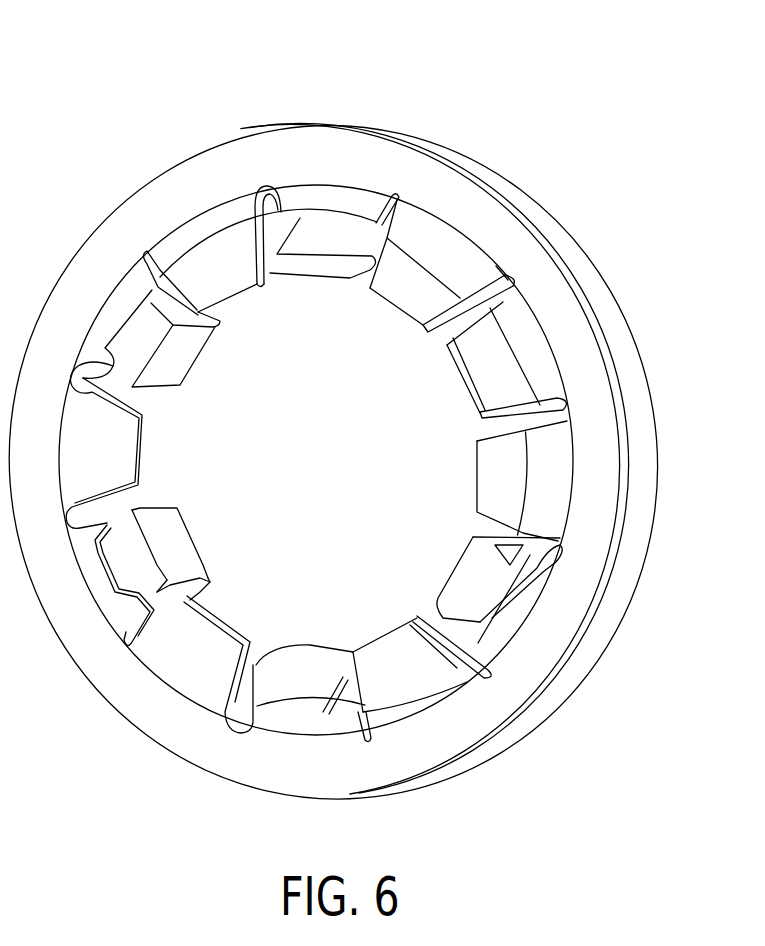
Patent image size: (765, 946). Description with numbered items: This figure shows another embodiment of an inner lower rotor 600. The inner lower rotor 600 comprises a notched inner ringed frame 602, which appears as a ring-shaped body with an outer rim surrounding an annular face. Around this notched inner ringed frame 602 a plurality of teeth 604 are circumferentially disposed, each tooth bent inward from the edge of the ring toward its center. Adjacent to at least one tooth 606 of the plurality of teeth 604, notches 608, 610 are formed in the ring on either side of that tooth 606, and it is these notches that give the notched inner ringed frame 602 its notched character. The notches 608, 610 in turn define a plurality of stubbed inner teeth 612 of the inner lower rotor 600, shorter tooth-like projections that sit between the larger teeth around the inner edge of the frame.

The inner lower rotor 600 is at (421, 92).
The notched inner ringed frame 602 is at (528, 248).
The plurality of teeth 604 is at (412, 318).
The tooth 606 is at (477, 482).
The notch 608 is at (567, 412).
The notch 610 is at (553, 556).
The stubbed inner teeth 612 is at (462, 633).